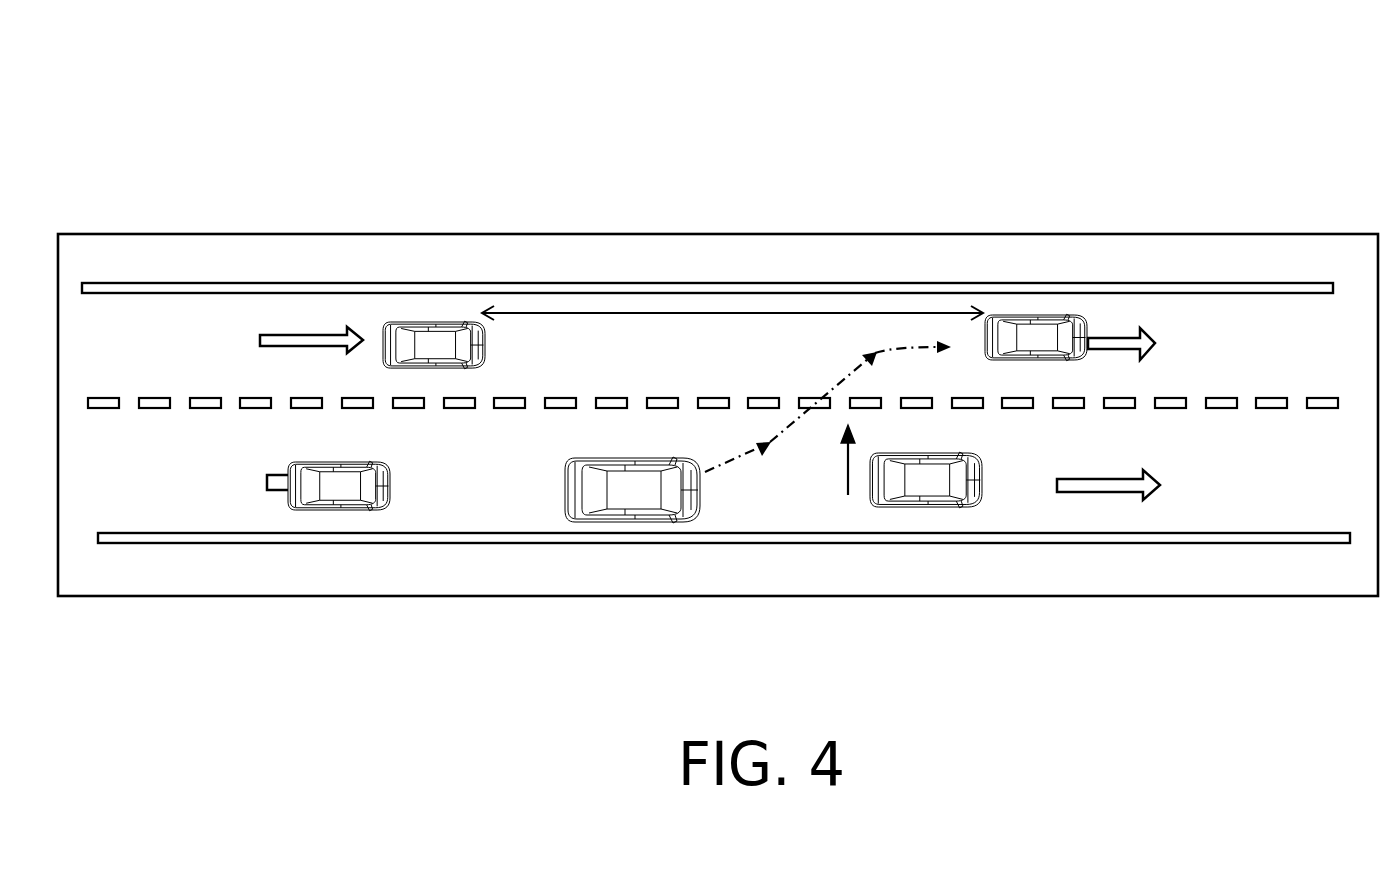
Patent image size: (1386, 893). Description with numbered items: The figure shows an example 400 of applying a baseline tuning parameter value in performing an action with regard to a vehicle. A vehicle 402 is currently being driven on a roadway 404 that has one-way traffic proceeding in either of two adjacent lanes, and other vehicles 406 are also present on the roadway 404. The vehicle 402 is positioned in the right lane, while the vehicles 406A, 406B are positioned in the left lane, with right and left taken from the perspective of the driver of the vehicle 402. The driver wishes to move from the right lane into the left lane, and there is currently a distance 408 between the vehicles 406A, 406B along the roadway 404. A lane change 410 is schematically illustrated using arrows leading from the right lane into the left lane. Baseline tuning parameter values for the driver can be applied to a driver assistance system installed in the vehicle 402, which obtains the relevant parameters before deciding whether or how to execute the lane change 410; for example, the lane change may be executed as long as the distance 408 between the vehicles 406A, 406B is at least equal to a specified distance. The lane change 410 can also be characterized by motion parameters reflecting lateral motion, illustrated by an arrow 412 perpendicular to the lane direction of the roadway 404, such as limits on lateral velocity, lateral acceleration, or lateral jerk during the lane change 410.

The example 400 is at (718, 314).
The vehicle 402 is at (618, 463).
The roadway 404 is at (724, 506).
The vehicles 406 is at (383, 486).
The vehicle 406A is at (489, 358).
The vehicle 406B is at (1095, 377).
The distance 408 is at (671, 313).
The lane change 410 is at (743, 453).
The arrow 412 is at (850, 448).